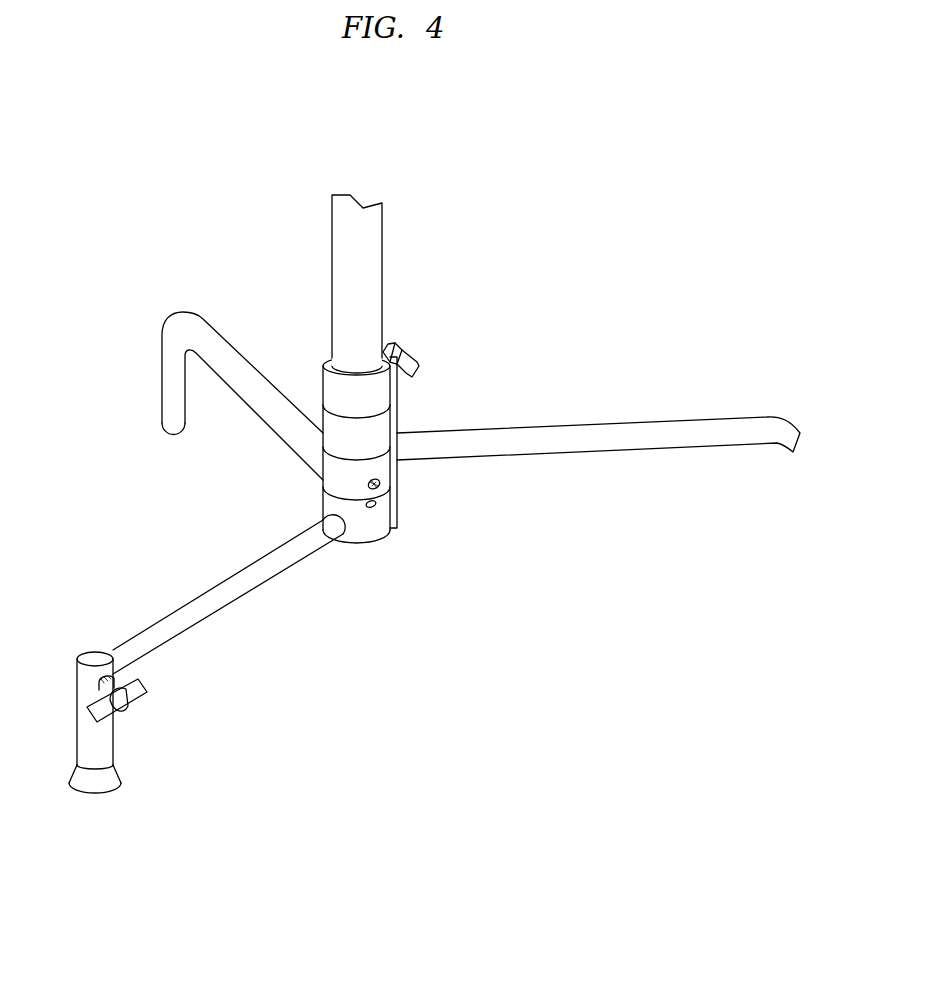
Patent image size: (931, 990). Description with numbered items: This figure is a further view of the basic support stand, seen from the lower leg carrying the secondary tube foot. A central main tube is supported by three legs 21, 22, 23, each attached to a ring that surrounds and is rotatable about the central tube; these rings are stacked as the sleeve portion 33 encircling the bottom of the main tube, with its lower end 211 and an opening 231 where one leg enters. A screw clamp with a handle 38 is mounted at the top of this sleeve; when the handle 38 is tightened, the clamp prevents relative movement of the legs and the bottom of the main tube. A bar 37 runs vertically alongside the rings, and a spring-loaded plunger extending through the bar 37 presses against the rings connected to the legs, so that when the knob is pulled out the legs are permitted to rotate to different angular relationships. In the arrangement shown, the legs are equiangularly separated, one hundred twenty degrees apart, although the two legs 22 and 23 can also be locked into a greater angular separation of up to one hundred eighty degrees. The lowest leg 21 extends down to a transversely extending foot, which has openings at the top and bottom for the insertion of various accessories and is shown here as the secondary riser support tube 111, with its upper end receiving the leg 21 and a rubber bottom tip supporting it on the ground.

The lowest leg 21 is at (212, 615).
The leg 22 is at (259, 417).
The leg 23 is at (557, 426).
The collar sleeve 33 is at (323, 378).
The bar 37 is at (398, 412).
The handle 38 is at (414, 353).
The secondary riser support tube 111 is at (115, 731).
The lower end of collar 211 is at (380, 537).
The insertion hole for arm 231 is at (370, 447).